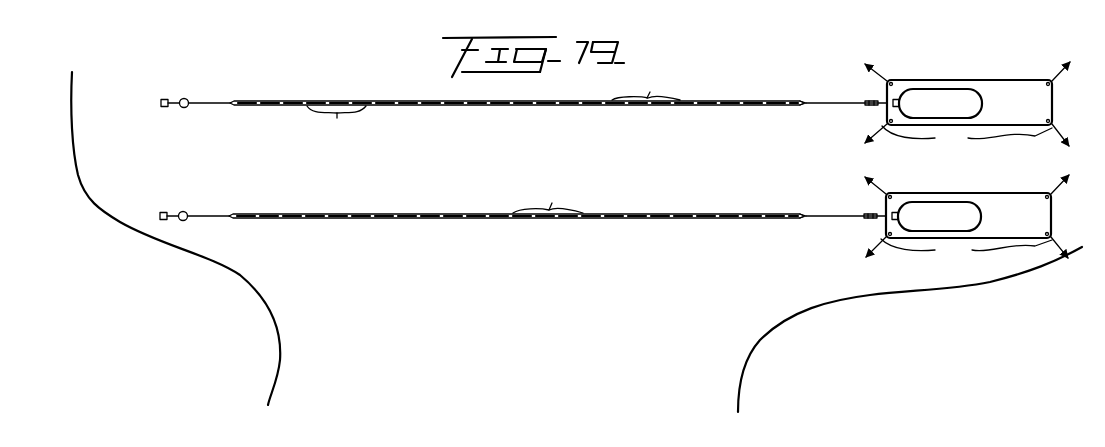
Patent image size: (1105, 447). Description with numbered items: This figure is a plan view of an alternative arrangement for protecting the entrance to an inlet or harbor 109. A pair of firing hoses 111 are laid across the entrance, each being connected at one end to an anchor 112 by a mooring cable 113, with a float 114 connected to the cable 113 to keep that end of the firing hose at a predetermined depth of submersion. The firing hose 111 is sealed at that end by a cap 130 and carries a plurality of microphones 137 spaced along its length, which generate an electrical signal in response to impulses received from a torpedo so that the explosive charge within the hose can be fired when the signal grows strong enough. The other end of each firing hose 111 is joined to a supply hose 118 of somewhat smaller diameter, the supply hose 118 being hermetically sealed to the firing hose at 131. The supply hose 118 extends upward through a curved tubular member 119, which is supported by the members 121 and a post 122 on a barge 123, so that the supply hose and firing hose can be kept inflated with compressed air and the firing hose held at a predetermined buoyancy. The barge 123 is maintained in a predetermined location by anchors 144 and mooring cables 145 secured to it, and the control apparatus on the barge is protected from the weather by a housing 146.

The harbor 109 is at (576, 242).
The firing hose 111 is at (381, 100).
The anchor 112 is at (161, 103).
The mooring cable 113 is at (206, 105).
The float 114 is at (188, 100).
The supply hose 118 is at (835, 105).
The curved tubular member 119 is at (868, 100).
The supporting members 121 is at (890, 105).
The post 122 is at (893, 85).
The barge 123 is at (980, 80).
The cap 130 is at (233, 101).
The hermetic seal 131 is at (807, 102).
The microphones 137 is at (493, 144).
The anchors 144 is at (864, 64).
The mooring cables 145 is at (880, 80).
The housing 146 is at (940, 160).